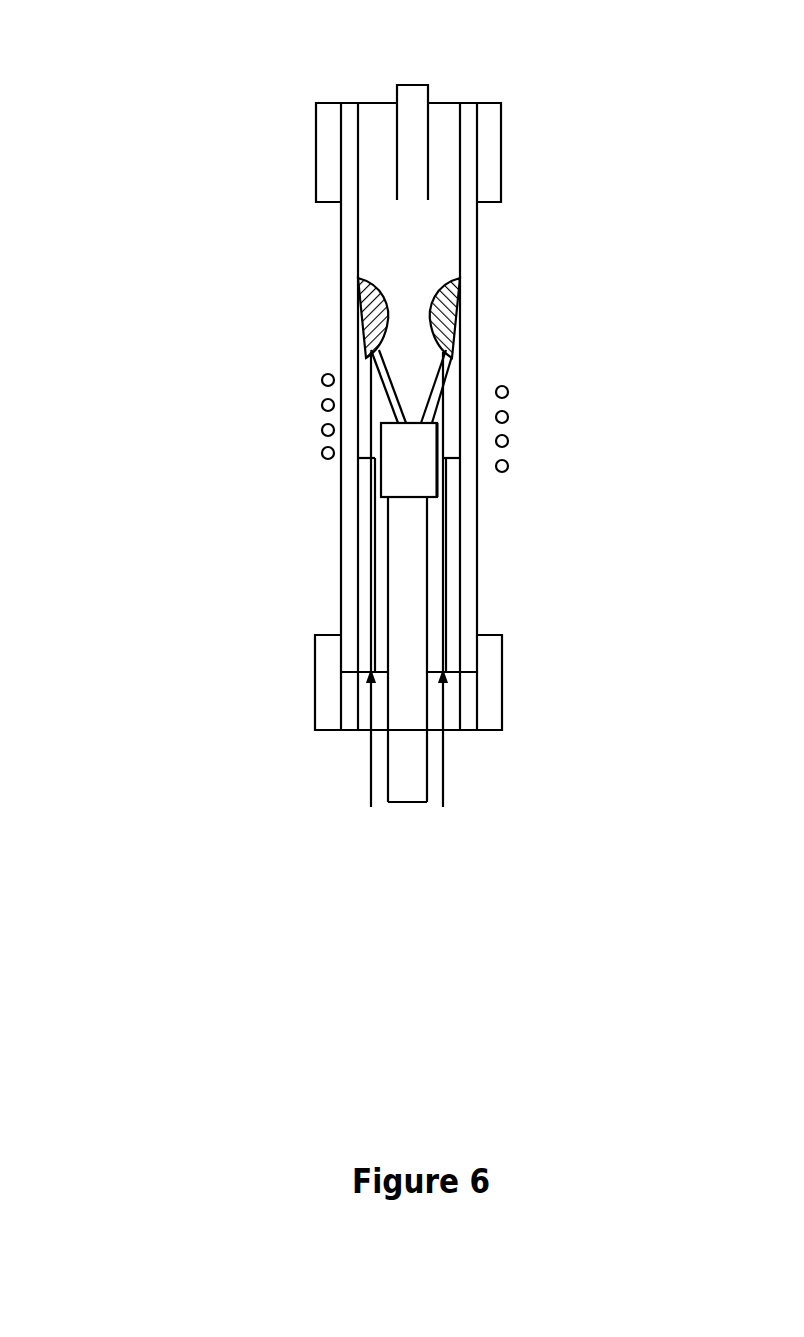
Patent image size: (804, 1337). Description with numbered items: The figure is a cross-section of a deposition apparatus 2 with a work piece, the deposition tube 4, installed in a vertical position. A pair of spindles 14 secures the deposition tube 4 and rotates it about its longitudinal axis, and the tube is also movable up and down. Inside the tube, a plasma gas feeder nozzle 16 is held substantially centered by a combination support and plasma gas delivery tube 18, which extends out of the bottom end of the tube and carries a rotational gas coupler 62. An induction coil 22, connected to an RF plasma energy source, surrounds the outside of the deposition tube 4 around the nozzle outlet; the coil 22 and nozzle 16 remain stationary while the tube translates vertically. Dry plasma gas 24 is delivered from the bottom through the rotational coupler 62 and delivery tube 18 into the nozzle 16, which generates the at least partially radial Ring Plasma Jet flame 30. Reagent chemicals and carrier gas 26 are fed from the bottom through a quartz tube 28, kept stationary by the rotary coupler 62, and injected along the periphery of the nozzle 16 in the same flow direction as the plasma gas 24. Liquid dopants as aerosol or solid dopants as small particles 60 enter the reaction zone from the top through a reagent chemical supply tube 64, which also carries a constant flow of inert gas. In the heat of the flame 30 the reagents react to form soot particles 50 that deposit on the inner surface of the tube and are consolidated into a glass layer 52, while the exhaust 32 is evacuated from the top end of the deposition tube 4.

The deposition apparatus 2 is at (120, 171).
The deposition tube 4 is at (339, 416).
The spindles 14 is at (512, 753).
The plasma gas feeder nozzle 16 is at (481, 640).
The combination support and plasma gas delivery tube 18 is at (427, 773).
The induction coil 22 is at (511, 404).
The plasma gas 24 is at (402, 630).
The reagent chemicals and carrier gas 26 is at (408, 592).
The reagent chemical supply tube 28 is at (370, 607).
The Ring Plasma Jet flame 30 is at (354, 421).
The exhaust 32 is at (375, 160).
The soot particles 50 is at (454, 286).
The glass layer 52 is at (360, 486).
The aerosol or small particles of dopants 60 is at (413, 244).
The rotational gas coupler 62 is at (293, 736).
The reagent chemical supply tube 64 is at (430, 95).